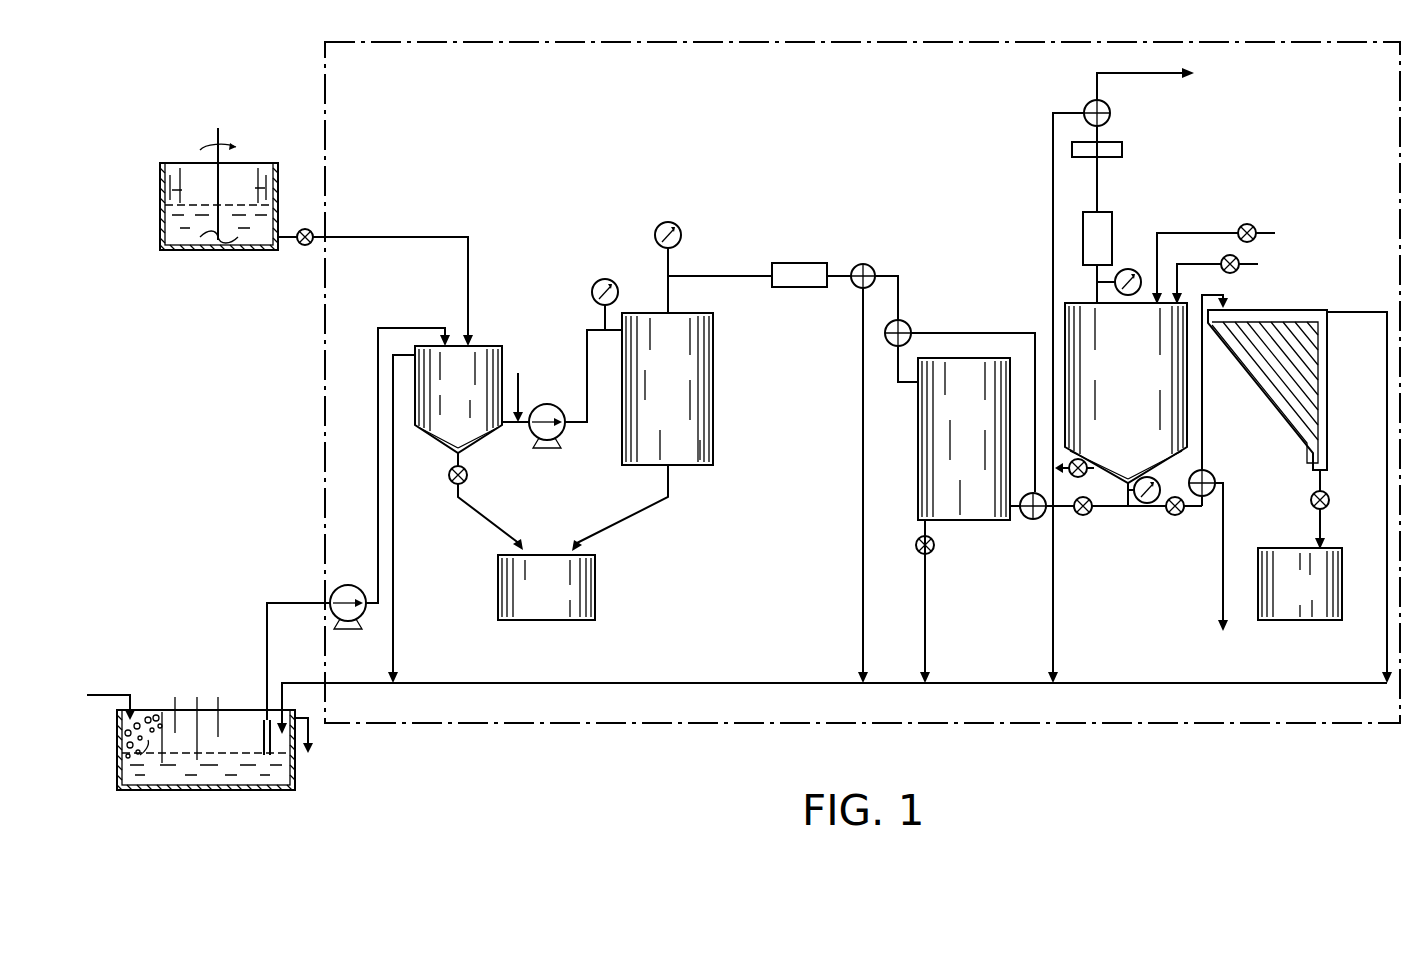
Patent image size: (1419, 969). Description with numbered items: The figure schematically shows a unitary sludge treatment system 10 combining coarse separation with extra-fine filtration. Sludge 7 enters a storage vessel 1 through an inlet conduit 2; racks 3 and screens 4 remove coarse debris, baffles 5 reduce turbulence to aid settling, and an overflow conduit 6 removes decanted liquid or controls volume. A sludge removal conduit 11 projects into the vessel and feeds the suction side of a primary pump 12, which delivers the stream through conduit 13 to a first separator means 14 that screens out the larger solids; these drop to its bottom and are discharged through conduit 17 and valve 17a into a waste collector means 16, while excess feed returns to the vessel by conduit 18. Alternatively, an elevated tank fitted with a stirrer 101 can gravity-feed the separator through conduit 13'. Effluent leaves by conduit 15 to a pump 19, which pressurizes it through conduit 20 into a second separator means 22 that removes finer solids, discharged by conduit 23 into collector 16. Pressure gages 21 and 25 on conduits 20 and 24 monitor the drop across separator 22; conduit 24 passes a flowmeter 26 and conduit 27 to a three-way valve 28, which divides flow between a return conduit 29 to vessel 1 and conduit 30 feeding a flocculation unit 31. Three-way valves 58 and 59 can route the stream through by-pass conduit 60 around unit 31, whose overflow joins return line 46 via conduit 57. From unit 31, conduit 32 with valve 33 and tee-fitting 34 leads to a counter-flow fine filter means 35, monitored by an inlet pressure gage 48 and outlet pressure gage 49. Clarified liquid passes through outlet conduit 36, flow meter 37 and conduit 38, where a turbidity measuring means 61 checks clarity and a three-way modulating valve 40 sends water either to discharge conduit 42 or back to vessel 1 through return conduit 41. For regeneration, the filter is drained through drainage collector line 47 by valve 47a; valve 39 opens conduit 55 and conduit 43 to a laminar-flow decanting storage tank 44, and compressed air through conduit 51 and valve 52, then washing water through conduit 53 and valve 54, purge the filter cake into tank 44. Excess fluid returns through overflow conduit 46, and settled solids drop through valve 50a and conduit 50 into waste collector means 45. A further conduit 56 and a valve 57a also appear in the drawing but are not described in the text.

The storage vessel 1 is at (195, 790).
The inlet conduit 2 is at (109, 686).
The racks 3 is at (144, 711).
The screens 4 is at (130, 764).
The baffles 5 is at (160, 690).
The overflow conduit 6 is at (312, 738).
The aqueous chemical sludge 7 is at (228, 758).
The unitary system 10 is at (840, 42).
The sludge removal conduit 11 is at (293, 588).
The primary pump 12 is at (366, 576).
The conduit 13 is at (395, 447).
The conduit 13' is at (393, 276).
The first separator means 14 is at (481, 400).
The conduit 15 is at (503, 430).
The waste collector means 16 is at (556, 609).
The conduit 17 is at (486, 527).
The valve 17a is at (450, 480).
The conduit 18 is at (393, 628).
The pump 19 is at (548, 450).
The conduit 20 is at (590, 400).
The pressure gage 21 is at (592, 279).
The second separator means 22 is at (681, 402).
The conduit 23 is at (630, 520).
The conduit 24 is at (700, 270).
The pressure gage 25 is at (665, 222).
The flowmeter 26 is at (806, 263).
The conduit 27 is at (843, 268).
The three-way valve 28 is at (872, 265).
The conduit 29 is at (863, 476).
The conduit 30 is at (900, 296).
The flocculation unit 31 is at (979, 456).
The conduit 32 is at (1014, 514).
The valve 33 is at (1083, 515).
The tee-fitting 34 is at (1128, 515).
The fine filter means 35 is at (1141, 397).
The outlet conduit 36 is at (1097, 294).
The flow meter 37 is at (1112, 240).
The conduit 38 is at (1097, 192).
The valve 39 is at (1175, 515).
The three-way modulating valve 40 is at (1089, 102).
The return conduit 41 is at (1053, 205).
The conduit 42 is at (1148, 78).
The conduit 43 is at (1202, 410).
The decanting storage tank 44 is at (1292, 360).
The waste collector means 45 is at (1319, 602).
The overflow conduit 46 is at (1387, 420).
The drainage collector line 47 is at (1074, 484).
The valve 47a is at (1109, 490).
The fine filter inlet pressure gage 48 is at (1168, 470).
The outlet pressure gage 49 is at (1142, 262).
The conduit 50 is at (1320, 528).
The valve 50a is at (1329, 500).
The conduit 51 is at (1204, 218).
The valve 52 is at (1250, 224).
The conduit 53 is at (1190, 270).
The valve 54 is at (1236, 272).
The conduit 55 is at (1227, 463).
The line 56 is at (518, 392).
The conduit 57 is at (925, 625).
The drain valve 57a is at (934, 548).
The three-way valve 58 is at (910, 324).
The three-way valve 59 is at (1033, 519).
The by-pass conduit 60 is at (985, 333).
The turbidity measuring means 61 is at (1122, 150).
The stirrer 101 is at (214, 138).